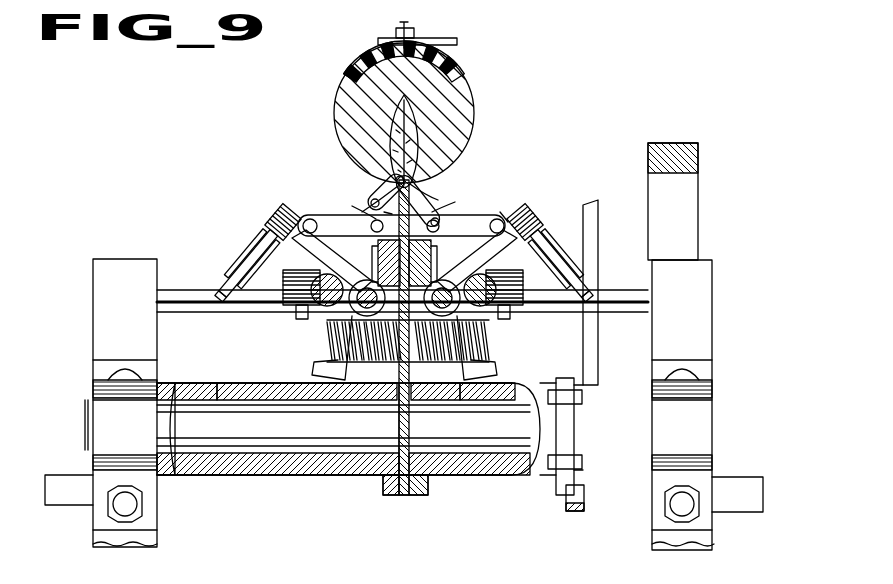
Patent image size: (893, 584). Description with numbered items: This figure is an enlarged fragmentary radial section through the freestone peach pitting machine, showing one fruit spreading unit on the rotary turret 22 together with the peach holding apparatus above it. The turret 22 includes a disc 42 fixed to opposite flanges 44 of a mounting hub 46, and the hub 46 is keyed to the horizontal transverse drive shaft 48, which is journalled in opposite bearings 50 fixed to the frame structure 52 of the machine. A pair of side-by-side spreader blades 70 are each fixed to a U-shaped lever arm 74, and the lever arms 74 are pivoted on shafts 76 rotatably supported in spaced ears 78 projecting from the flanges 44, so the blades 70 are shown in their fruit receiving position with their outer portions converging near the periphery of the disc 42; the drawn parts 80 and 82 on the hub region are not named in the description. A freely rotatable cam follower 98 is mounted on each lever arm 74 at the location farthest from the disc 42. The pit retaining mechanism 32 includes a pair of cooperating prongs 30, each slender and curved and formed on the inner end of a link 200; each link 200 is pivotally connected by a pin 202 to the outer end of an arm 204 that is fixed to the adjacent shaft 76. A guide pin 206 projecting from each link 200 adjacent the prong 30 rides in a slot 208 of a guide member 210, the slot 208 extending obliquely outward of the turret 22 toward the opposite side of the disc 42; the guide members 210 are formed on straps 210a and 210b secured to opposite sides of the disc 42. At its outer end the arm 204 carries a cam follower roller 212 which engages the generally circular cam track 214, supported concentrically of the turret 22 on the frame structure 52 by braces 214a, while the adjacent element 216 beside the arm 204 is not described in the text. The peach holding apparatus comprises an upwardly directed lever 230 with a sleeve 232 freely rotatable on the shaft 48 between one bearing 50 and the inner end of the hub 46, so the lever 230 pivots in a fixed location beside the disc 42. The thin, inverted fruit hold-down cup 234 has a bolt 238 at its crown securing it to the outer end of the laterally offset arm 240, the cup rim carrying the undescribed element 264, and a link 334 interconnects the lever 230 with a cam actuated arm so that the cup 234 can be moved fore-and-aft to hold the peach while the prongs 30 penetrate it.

The rotary turret 22 is at (412, 490).
The prong 30 is at (372, 219).
The pit retaining mechanism 32 is at (298, 207).
The disc 42 is at (404, 494).
The flange 44 is at (408, 380).
The mounting hub 46 is at (330, 470).
The drive shaft 48 is at (348, 429).
The bearing 50 is at (403, 460).
The frame structure 52 is at (92, 346).
The spreader blade 70 is at (385, 262).
The lever arm 74 is at (325, 308).
The shaft 76 is at (330, 372).
The ear 78 is at (352, 318).
The roller hub portion 80 is at (346, 386).
The roller end portion 82 is at (328, 385).
The cam follower 98 is at (288, 302).
The link 200 is at (401, 226).
The pin 202 is at (256, 253).
The arm 204 is at (250, 270).
The guide pin 206 is at (425, 242).
The slot 208 is at (382, 213).
The guide member 210 is at (380, 193).
The strap 210a is at (392, 214).
The strap 210b is at (506, 214).
The cam follower roller 212 is at (268, 218).
The cam track 214 is at (298, 317).
The brace 214a is at (238, 287).
The piston rod 216 is at (262, 236).
The lever 230 is at (598, 352).
The sleeve 232 is at (562, 472).
The fruit hold-down cup 234 is at (466, 60).
The bolt 238 is at (414, 30).
The arm 240 is at (457, 42).
The cap segments 264 is at (464, 76).
The link 334 is at (584, 500).